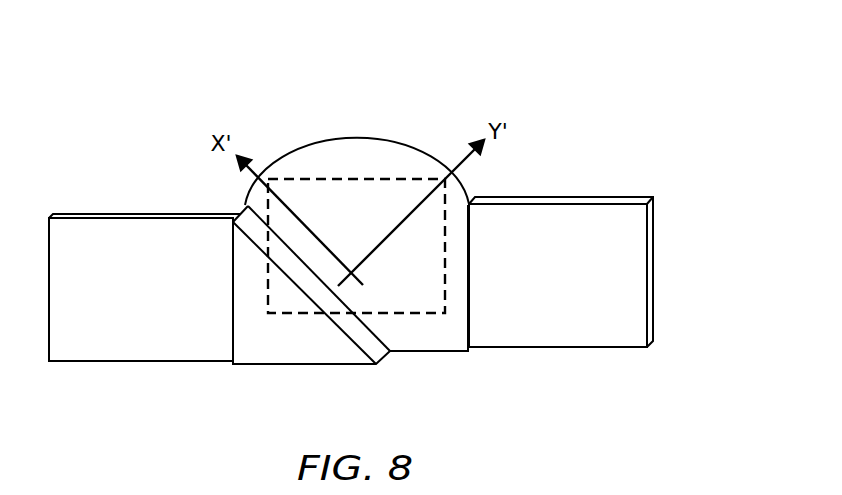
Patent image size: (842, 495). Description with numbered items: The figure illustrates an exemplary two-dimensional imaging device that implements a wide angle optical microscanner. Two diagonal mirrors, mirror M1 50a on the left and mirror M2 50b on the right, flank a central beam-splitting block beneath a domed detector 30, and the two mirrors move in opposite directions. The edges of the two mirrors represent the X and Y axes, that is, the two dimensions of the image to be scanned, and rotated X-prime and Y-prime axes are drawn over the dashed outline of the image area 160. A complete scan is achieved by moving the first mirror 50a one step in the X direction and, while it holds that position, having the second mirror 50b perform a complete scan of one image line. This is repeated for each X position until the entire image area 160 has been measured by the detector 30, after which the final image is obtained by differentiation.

The detector 30 is at (336, 141).
The diagonal mirror M1 50a is at (132, 361).
The diagonal mirror M2 50b is at (572, 347).
The image area 160 is at (420, 313).